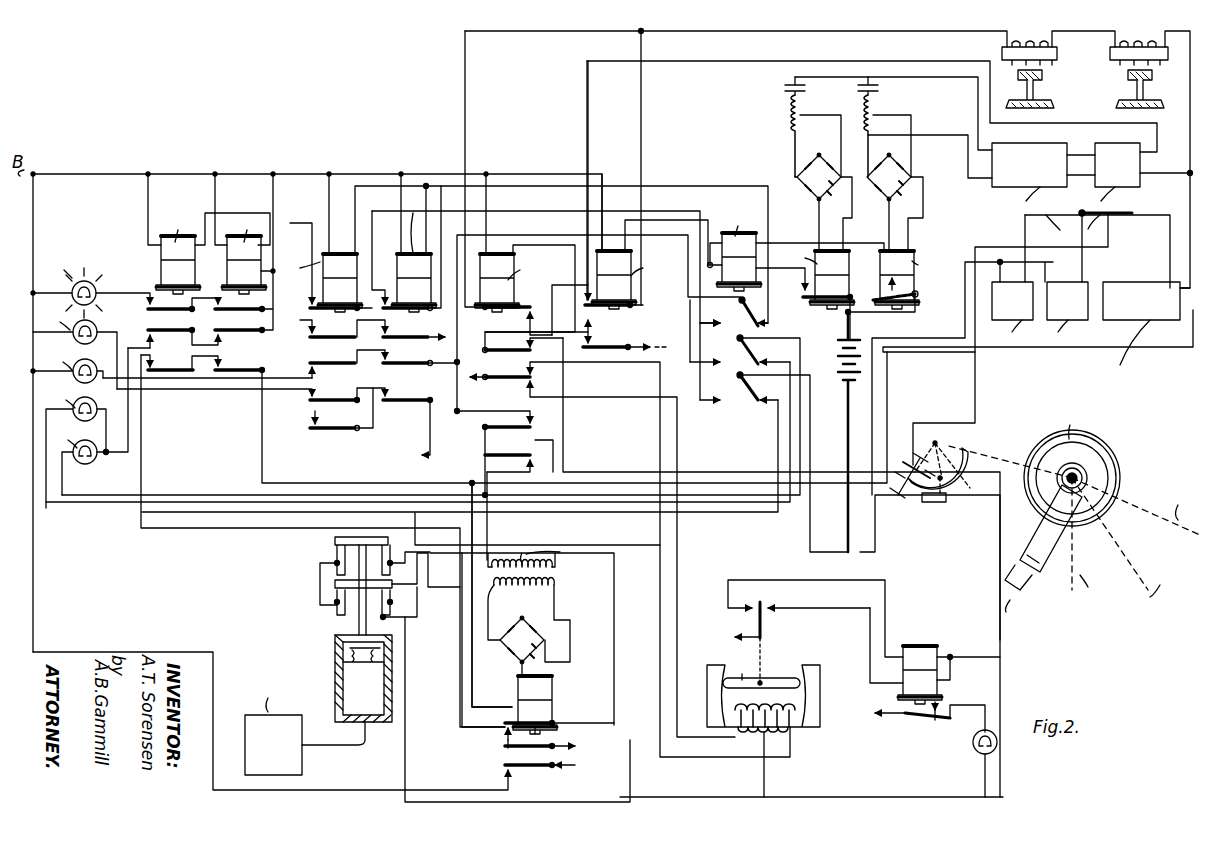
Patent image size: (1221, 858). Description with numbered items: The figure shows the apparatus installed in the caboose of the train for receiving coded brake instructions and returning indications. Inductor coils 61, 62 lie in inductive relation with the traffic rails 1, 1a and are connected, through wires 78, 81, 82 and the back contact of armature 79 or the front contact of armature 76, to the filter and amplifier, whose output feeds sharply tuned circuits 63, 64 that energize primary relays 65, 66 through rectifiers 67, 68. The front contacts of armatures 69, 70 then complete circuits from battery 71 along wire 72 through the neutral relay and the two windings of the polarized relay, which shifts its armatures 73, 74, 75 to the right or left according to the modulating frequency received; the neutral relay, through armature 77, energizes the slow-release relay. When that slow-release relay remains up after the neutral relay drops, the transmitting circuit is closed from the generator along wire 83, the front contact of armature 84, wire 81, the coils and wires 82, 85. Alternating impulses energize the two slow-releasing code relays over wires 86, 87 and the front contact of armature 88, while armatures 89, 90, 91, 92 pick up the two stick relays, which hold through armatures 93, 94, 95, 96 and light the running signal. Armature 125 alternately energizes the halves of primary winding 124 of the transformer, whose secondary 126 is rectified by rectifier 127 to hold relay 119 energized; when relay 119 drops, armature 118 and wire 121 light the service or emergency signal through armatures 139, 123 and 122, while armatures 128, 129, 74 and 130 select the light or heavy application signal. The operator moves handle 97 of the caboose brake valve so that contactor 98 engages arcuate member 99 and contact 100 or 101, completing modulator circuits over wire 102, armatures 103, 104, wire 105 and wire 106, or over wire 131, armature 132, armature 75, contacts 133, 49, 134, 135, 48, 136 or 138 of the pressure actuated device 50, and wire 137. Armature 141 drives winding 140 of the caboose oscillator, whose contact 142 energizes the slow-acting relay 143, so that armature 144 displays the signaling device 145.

The traffic rail 1 is at (1035, 90).
The traffic rail 1a is at (1125, 93).
The contactor of pressure actuated device 48 is at (392, 531).
The contactor of pressure actuated device 49 is at (322, 584).
The pressure actuated device 50 is at (334, 658).
The inductor coil 61 is at (1029, 43).
The inductor coil 62 is at (1139, 43).
The tuned circuit 63 is at (888, 127).
The tuned circuit 64 is at (925, 127).
The primary relay 65 is at (819, 277).
The primary relay 66 is at (908, 279).
The full-wave rectifier 67 is at (798, 166).
The rectifier 68 is at (895, 201).
The armature of relay 65 69 is at (828, 318).
The armature of relay 66 70 is at (895, 310).
The battery 71 is at (836, 360).
The wire 72 is at (350, 174).
The polarized armature of relay P 73 is at (734, 311).
The polarized armature of relay P 74 is at (736, 358).
The polarized armature of relay P 75 is at (736, 396).
The armature of relay N 76 is at (618, 308).
The armature of relay N 77 is at (576, 335).
The wire 78 is at (844, 61).
The armature of relay S1 79 is at (507, 320).
The wire 81 is at (818, 29).
The wire 82 is at (1172, 150).
The wire 83 is at (1070, 354).
The armature of relay S1 84 is at (742, 563).
The wire 85 is at (1176, 194).
The wire 86 is at (744, 186).
The wire 87 is at (532, 242).
The armature of relay S1 88 is at (492, 430).
The armature 89 is at (346, 430).
The armature 90 is at (387, 404).
The armature of relay EA 91 is at (322, 318).
The armature of relay SA 92 is at (412, 260).
The armature 93 is at (173, 323).
The armature 94 is at (233, 252).
The armature 95 is at (347, 341).
The armature of relay SA 96 is at (422, 343).
The handle of brake valve EV1 97 is at (1030, 580).
The contactor 98 is at (938, 498).
The arcuate contact member 99 is at (961, 459).
The contact 100 is at (902, 495).
The contact 101 is at (948, 500).
The wire 102 is at (727, 484).
The armature of relay R1 103 is at (551, 418).
The armature of relay R2 104 is at (172, 368).
The wire 105 is at (170, 531).
The wire 106 is at (975, 394).
The armature of relay 119 118 is at (516, 768).
The relay 119 is at (543, 696).
The wire 121 is at (162, 650).
The armature of relay EA 122 is at (244, 370).
The armature of relay SA 123 is at (420, 376).
The primary winding of transformer T 124 is at (556, 570).
The armature of relay S1 125 is at (482, 462).
The secondary of transformer T 126 is at (530, 620).
The full-wave rectifier 127 is at (548, 642).
The armature 128 is at (230, 322).
The armature 129 is at (148, 330).
The armature of relay 119 130 is at (506, 754).
The wire 131 is at (478, 648).
The armature of relay 119 132 is at (506, 730).
The contact of device 50 133 is at (392, 602).
The contact of device 50 134 is at (330, 608).
The contact of device 50 135 is at (334, 542).
The contact of device 50 136 is at (415, 545).
The wire 137 is at (836, 800).
The contact of device 50 138 is at (386, 618).
The armature of relay EA 139 is at (306, 394).
The winding of oscillator N3 140 is at (788, 728).
The armature of relay S1 141 is at (595, 545).
The contact of armature H 142 is at (764, 612).
The slow-acting relay 143 is at (948, 672).
The armature of relay 143 144 is at (916, 718).
The signaling device 145 is at (974, 746).